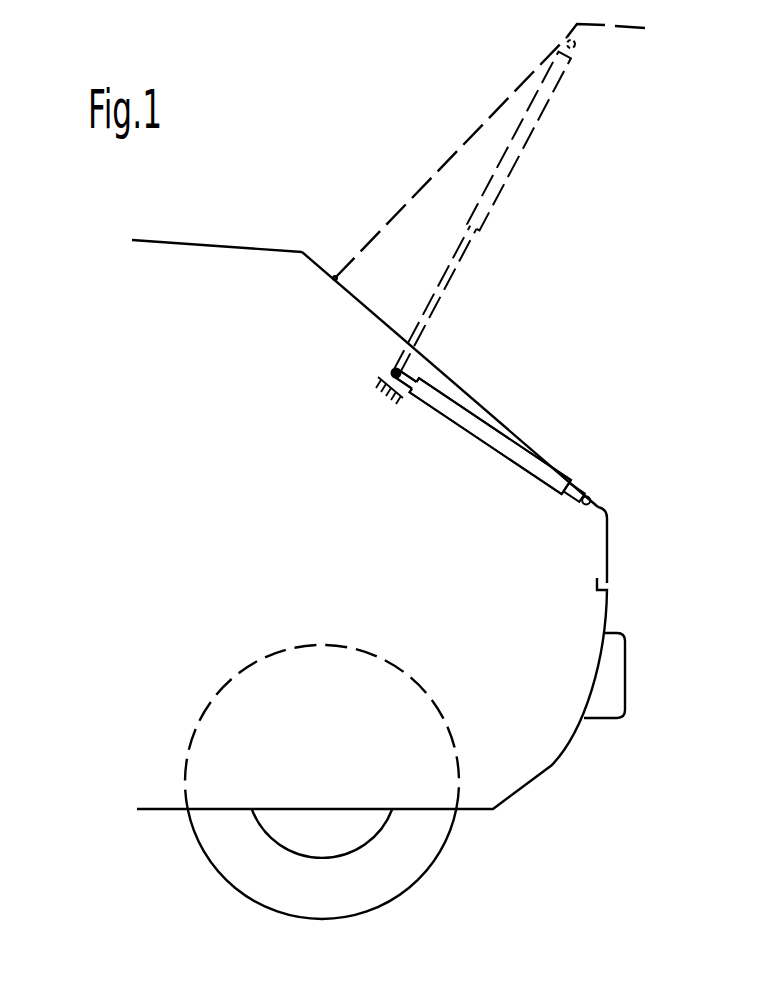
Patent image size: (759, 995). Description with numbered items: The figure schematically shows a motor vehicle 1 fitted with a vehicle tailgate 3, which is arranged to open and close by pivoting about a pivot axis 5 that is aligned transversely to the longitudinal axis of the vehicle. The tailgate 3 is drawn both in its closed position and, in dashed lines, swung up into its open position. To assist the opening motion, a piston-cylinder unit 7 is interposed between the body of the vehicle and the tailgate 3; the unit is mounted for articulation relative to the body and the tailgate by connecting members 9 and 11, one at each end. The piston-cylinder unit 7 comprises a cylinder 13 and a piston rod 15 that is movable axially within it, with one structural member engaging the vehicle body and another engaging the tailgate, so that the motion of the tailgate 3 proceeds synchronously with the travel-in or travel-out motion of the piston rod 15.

The motor vehicle 1 is at (640, 610).
The vehicle tailgate 3 is at (455, 148).
The pivot axis 5 is at (333, 280).
The piston-cylinder unit 7 is at (492, 458).
The connecting member 9 is at (590, 500).
The connecting member 11 is at (382, 388).
The cylinder 13 is at (552, 107).
The piston rod 15 is at (463, 257).